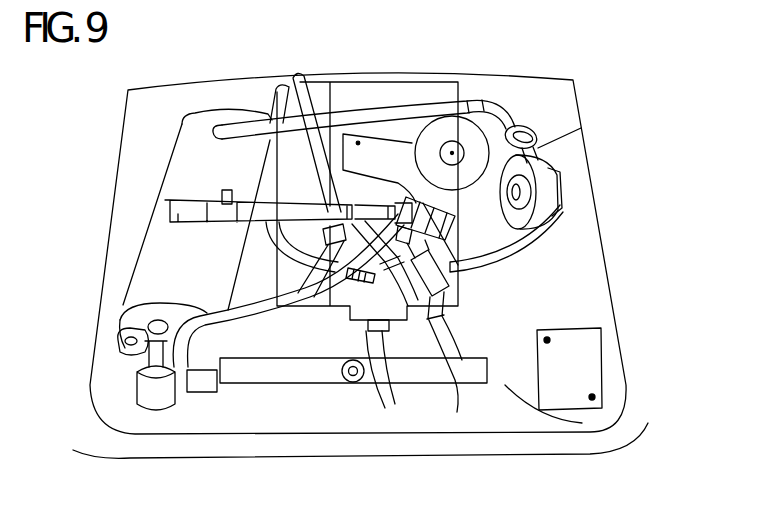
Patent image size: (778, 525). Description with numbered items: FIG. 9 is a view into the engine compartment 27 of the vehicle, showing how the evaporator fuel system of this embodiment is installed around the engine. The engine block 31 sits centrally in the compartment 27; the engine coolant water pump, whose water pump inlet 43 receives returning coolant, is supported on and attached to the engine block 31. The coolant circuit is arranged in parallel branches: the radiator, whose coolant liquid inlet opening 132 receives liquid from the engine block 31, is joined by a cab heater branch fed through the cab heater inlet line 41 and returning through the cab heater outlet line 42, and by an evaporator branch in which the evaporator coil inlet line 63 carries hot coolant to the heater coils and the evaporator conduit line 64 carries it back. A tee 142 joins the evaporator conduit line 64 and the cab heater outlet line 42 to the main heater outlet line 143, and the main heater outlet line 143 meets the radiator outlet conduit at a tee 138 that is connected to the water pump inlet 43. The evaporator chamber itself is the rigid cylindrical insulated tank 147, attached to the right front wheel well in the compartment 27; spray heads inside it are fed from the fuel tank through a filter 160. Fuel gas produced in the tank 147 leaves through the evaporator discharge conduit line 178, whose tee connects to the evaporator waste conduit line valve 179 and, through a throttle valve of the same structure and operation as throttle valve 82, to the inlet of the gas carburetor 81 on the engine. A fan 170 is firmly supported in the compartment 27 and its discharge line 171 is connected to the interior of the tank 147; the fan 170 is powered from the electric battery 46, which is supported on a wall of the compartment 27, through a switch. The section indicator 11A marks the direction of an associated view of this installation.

The cab heater outlet line 42 is at (275, 93).
The cab heater inlet line 41 is at (296, 74).
The engine block 31 is at (348, 93).
The discharge line 171 is at (358, 115).
The compartment 27 is at (500, 98).
The gas carburetor 81 is at (472, 148).
The fan 170 is at (553, 183).
The tank 147 is at (205, 172).
The evaporator waste conduit line valve 179 is at (232, 190).
The evaporator discharge conduit line 178 is at (213, 222).
The throttle valve 82 is at (440, 232).
The evaporator coil inlet line 63 is at (118, 337).
The filter 160 is at (145, 383).
The evaporator conduit line 64 is at (238, 315).
The tee 142 is at (362, 272).
The main heater outlet line 143 is at (347, 280).
The water pump inlet 43 is at (380, 377).
The tee 138 is at (362, 399).
The coolant liquid inlet opening 132 is at (455, 403).
The electric battery 46 is at (573, 377).
The section view indicator 11A is at (132, 413).